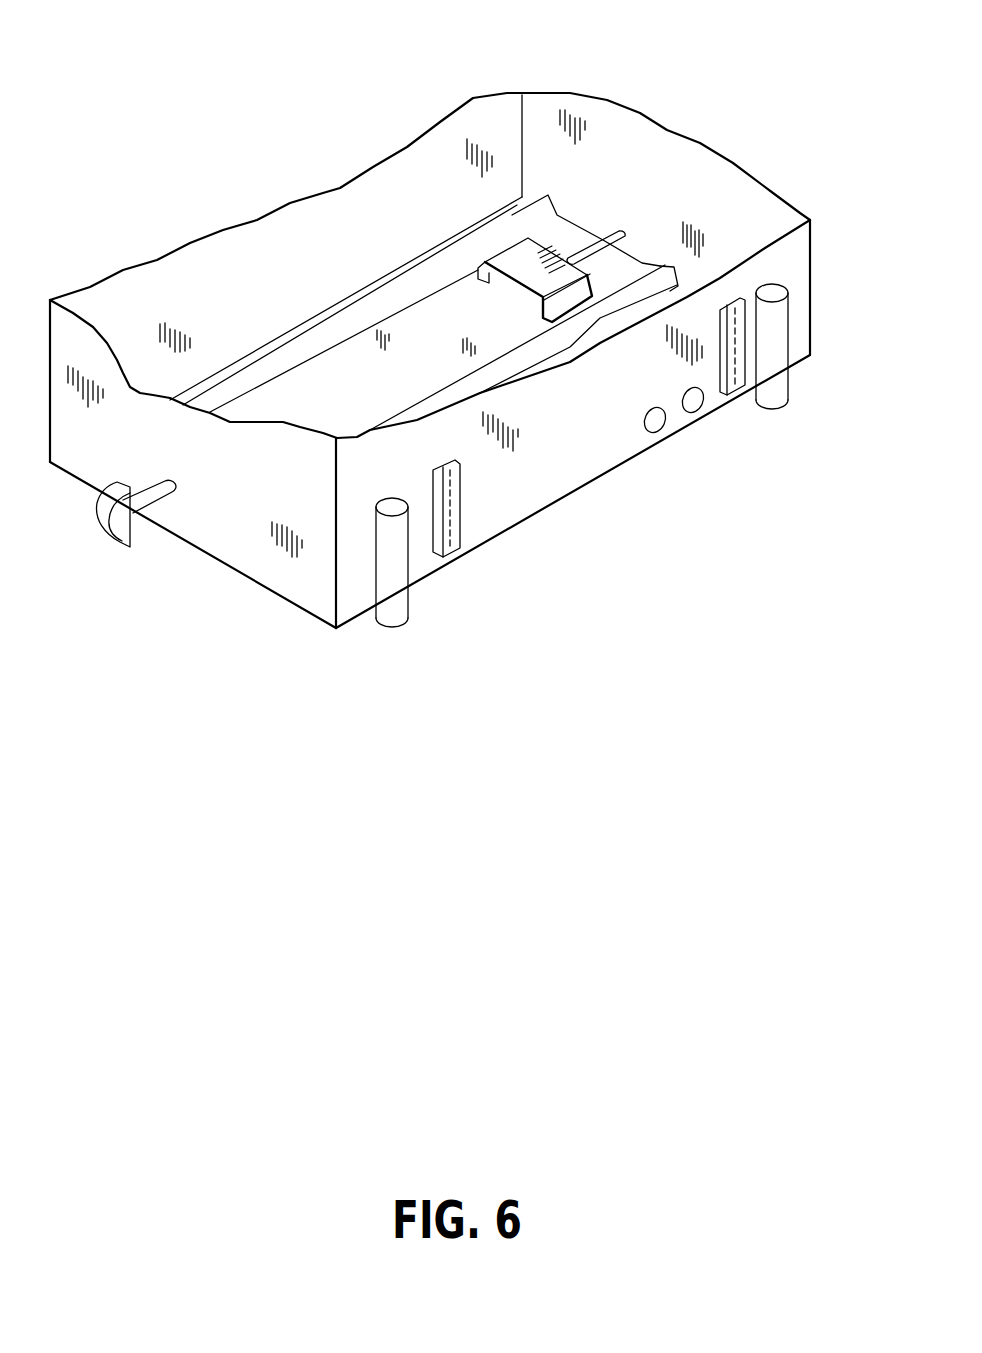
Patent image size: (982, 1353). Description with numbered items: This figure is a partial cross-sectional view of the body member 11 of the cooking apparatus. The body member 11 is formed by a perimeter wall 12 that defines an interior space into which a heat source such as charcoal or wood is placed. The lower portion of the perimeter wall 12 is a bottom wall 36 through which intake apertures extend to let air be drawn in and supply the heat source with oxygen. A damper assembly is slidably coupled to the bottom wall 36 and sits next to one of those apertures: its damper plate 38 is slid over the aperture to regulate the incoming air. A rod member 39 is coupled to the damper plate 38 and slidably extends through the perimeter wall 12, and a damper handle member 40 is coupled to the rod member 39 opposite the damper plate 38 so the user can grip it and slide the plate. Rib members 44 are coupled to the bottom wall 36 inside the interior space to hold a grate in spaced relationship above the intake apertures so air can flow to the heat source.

The body member 11 is at (812, 220).
The perimeter wall 12 is at (672, 158).
The bottom wall 36 is at (437, 245).
The damper plate 38 is at (525, 260).
The rod member 39 is at (590, 245).
The damper handle member 40 is at (117, 533).
The rib member 44 is at (492, 237).